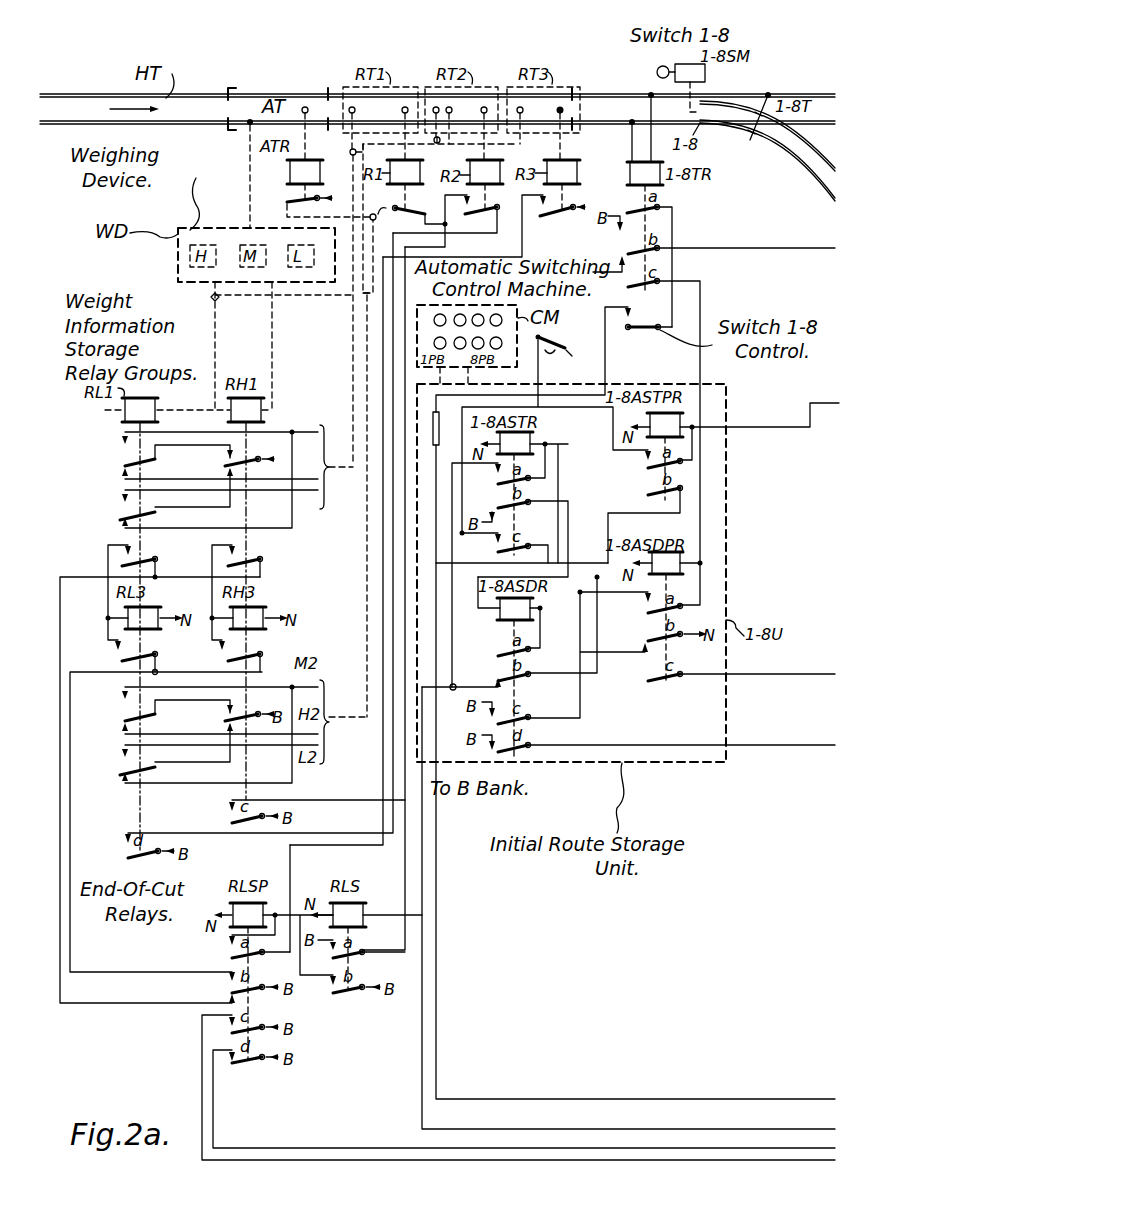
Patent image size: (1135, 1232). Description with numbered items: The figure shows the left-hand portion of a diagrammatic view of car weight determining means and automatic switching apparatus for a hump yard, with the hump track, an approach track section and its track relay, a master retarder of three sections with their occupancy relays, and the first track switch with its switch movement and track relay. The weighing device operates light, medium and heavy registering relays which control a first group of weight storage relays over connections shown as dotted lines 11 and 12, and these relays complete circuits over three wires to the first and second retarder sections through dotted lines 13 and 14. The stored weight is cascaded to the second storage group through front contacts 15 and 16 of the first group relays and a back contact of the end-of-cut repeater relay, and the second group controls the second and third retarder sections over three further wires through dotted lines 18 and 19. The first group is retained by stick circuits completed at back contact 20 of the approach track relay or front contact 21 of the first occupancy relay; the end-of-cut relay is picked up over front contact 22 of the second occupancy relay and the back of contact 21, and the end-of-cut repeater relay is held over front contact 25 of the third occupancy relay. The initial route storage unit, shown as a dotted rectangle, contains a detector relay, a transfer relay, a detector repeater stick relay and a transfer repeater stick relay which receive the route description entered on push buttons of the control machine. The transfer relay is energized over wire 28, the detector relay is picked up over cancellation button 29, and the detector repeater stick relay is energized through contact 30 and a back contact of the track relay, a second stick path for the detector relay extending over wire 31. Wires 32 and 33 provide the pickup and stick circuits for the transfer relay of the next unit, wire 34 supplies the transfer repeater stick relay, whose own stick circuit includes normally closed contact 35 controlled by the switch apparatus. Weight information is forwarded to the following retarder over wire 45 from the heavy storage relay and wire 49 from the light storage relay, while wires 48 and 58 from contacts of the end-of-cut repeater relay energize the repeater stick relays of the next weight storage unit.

The dotted line connection 11 is at (217, 306).
The dotted line connection 12 is at (272, 306).
The dotted line connection to retarders 13 is at (353, 312).
The dotted line connection to retarders 14 is at (426, 144).
The front contact of relay RL1 15 is at (148, 560).
The front contact of relay RH1 16 is at (253, 560).
The dotted line connection to retarders 18 is at (356, 464).
The dotted line connection to retarders 19 is at (516, 144).
The back contact of relay ATR 20 is at (287, 203).
The contact of occupancy relay R1 21 is at (400, 218).
The front contact of relay R2 22 is at (468, 220).
The front contact of relay R3 25 is at (548, 218).
The wire 28 is at (428, 762).
The cancellation button 29 is at (548, 356).
The contact closed by previous banks 30 is at (428, 418).
The wire 31 is at (740, 250).
The wire 32 is at (802, 672).
The wire 33 is at (802, 742).
The wire 34 is at (785, 428).
The contact controlled by switch 1-8 apparatus 35 is at (676, 324).
The wire 45 is at (820, 1100).
The wire 48 is at (822, 1150).
The wire 49 is at (820, 1128).
The wire 58 is at (754, 1162).